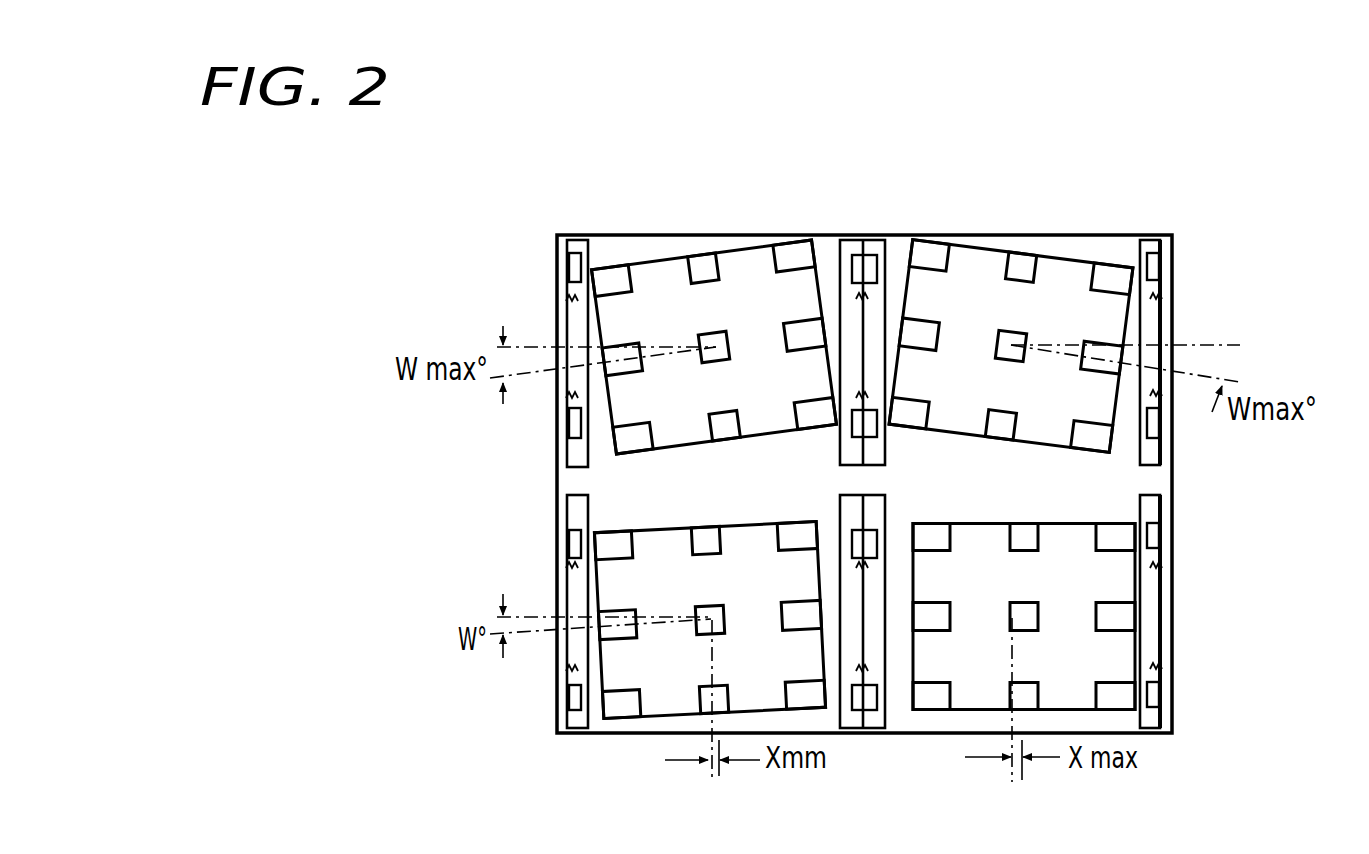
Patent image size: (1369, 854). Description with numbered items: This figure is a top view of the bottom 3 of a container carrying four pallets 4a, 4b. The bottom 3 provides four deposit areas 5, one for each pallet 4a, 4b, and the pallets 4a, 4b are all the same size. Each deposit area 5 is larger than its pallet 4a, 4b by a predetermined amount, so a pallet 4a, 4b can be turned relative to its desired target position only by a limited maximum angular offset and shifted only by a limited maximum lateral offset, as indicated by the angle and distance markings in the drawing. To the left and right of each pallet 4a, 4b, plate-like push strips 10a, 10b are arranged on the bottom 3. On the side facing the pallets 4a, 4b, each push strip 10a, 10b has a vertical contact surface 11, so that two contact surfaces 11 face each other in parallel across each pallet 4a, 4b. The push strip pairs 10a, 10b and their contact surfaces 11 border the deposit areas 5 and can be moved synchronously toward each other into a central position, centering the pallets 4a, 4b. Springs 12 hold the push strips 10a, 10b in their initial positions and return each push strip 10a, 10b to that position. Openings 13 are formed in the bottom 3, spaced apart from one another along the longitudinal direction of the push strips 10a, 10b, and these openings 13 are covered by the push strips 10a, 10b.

The bottom 3 is at (1178, 256).
The pallet 4a is at (740, 250).
The pallet 4b is at (968, 255).
The deposit area 5 is at (645, 248).
The push strip 10a is at (582, 248).
The push strip 10b is at (842, 250).
The contact surface 11 is at (590, 393).
The spring 12 is at (567, 300).
The opening 13 is at (568, 262).